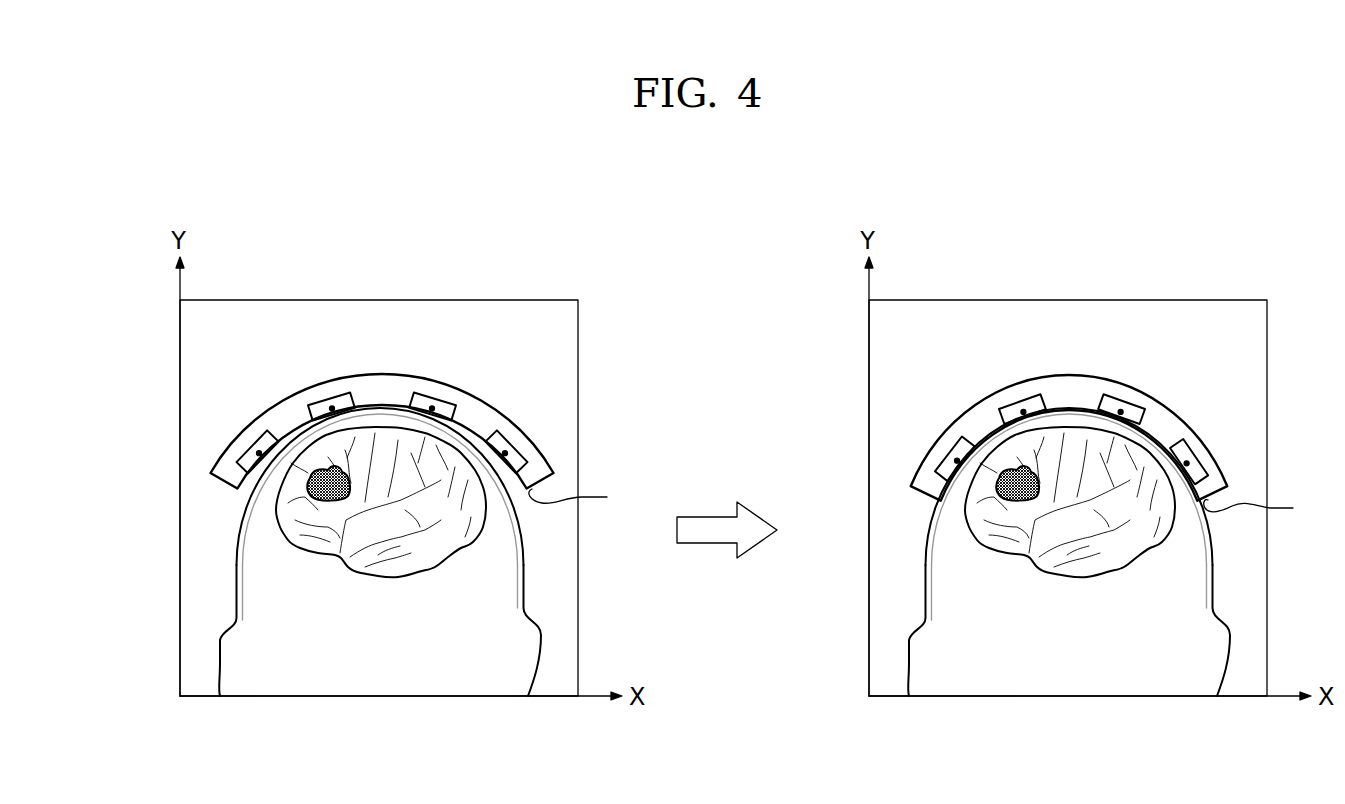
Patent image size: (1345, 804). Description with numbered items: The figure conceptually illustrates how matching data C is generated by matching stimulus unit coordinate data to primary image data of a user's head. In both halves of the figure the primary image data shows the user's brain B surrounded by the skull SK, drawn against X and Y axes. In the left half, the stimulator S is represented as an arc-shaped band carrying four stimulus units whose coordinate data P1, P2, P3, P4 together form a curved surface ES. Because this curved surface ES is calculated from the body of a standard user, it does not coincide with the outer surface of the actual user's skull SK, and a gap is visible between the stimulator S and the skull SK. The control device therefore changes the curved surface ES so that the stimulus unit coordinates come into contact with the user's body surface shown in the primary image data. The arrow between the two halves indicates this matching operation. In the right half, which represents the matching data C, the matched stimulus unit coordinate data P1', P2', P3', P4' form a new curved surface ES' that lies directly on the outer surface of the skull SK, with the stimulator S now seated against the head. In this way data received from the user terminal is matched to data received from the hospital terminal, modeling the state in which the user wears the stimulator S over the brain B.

The matching data C is at (1216, 300).
The stimulator S is at (236, 440).
The curved surface ES is at (585, 498).
The curved surface (matched) ES' is at (1267, 509).
The stimulus unit coordinate data P1 is at (258, 416).
The stimulus unit coordinate data P2 is at (331, 372).
The stimulus unit coordinate data P3 is at (432, 372).
The stimulus unit coordinate data P4 is at (506, 416).
The matched stimulus unit coordinate data P1' is at (948, 421).
The matched stimulus unit coordinate data P2' is at (1022, 374).
The matched stimulus unit coordinate data P3' is at (1121, 374).
The matched stimulus unit coordinate data P4' is at (1197, 423).
The skull SK is at (237, 593).
The brain B is at (380, 578).